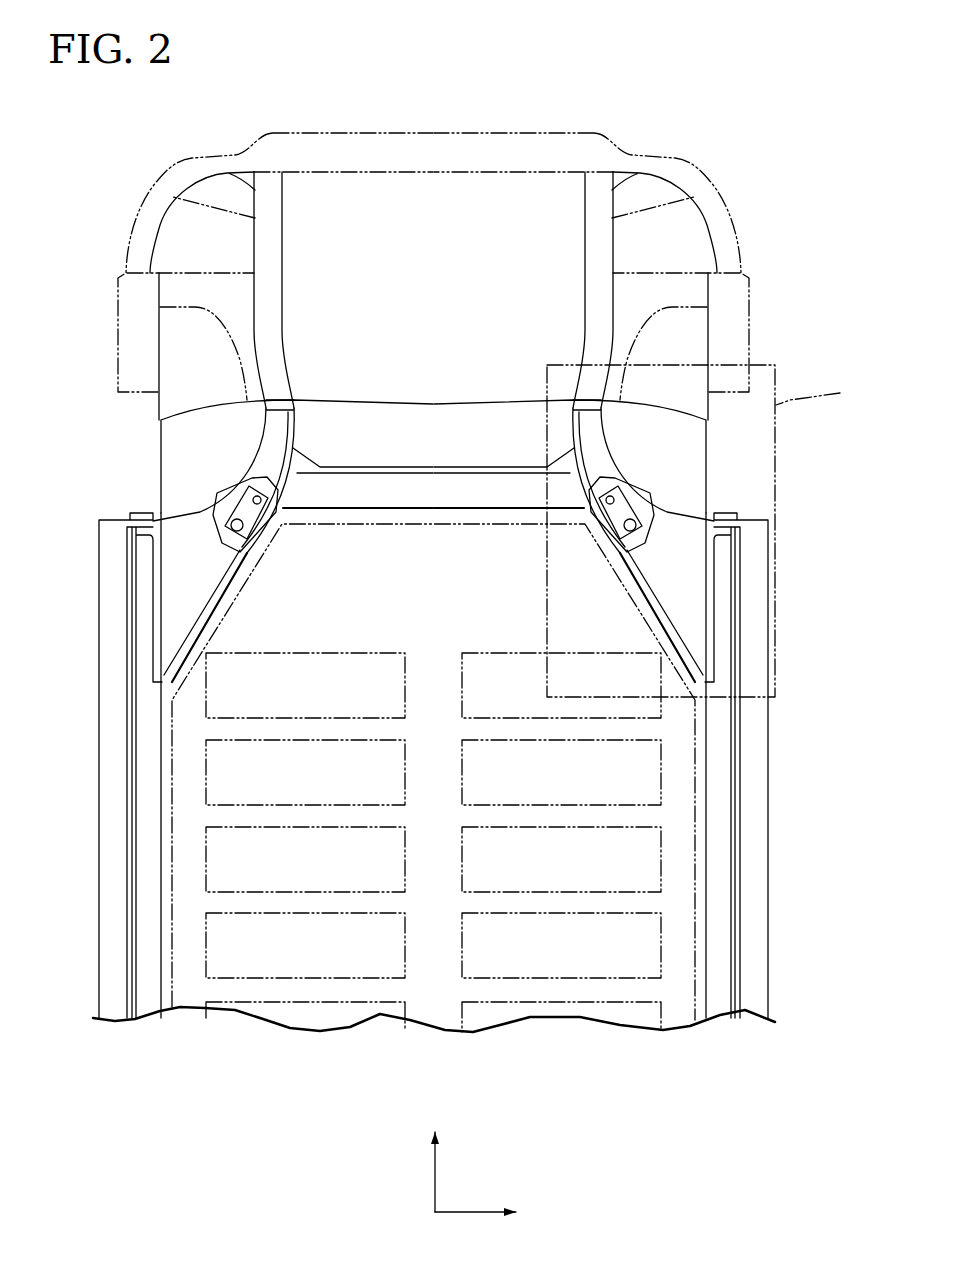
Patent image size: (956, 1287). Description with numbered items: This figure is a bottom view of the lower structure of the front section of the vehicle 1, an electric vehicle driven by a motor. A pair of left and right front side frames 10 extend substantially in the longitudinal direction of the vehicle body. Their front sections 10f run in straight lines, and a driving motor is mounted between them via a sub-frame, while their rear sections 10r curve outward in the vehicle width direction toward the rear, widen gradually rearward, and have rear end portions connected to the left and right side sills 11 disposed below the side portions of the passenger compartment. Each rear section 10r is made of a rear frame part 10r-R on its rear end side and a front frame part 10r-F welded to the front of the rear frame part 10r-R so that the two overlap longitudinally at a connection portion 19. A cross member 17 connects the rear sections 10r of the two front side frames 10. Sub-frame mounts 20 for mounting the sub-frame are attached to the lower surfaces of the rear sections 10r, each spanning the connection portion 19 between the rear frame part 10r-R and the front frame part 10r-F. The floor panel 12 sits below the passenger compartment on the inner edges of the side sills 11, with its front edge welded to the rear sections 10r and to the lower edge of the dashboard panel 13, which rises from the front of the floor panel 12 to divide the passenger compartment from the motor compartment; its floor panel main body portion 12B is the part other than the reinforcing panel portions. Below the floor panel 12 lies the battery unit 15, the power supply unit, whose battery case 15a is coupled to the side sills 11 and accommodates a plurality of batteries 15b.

The vehicle 1 is at (733, 104).
The front side frame 10 is at (286, 211).
The front section of front side frame 10f is at (283, 262).
The rear section of front side frame 10r is at (197, 510).
The front frame part 10r-F is at (595, 455).
The rear frame part 10r-R is at (665, 558).
The side sill 11 is at (113, 835).
The floor panel 12 is at (636, 1022).
The floor panel main body portion 12B is at (257, 617).
The dashboard panel 13 is at (435, 415).
The battery unit 15 is at (702, 842).
The battery case 15a is at (697, 968).
The battery 15b is at (206, 765).
The cross member 17 is at (433, 510).
The connection portion 19 is at (257, 500).
The sub-frame mount 20 is at (219, 530).